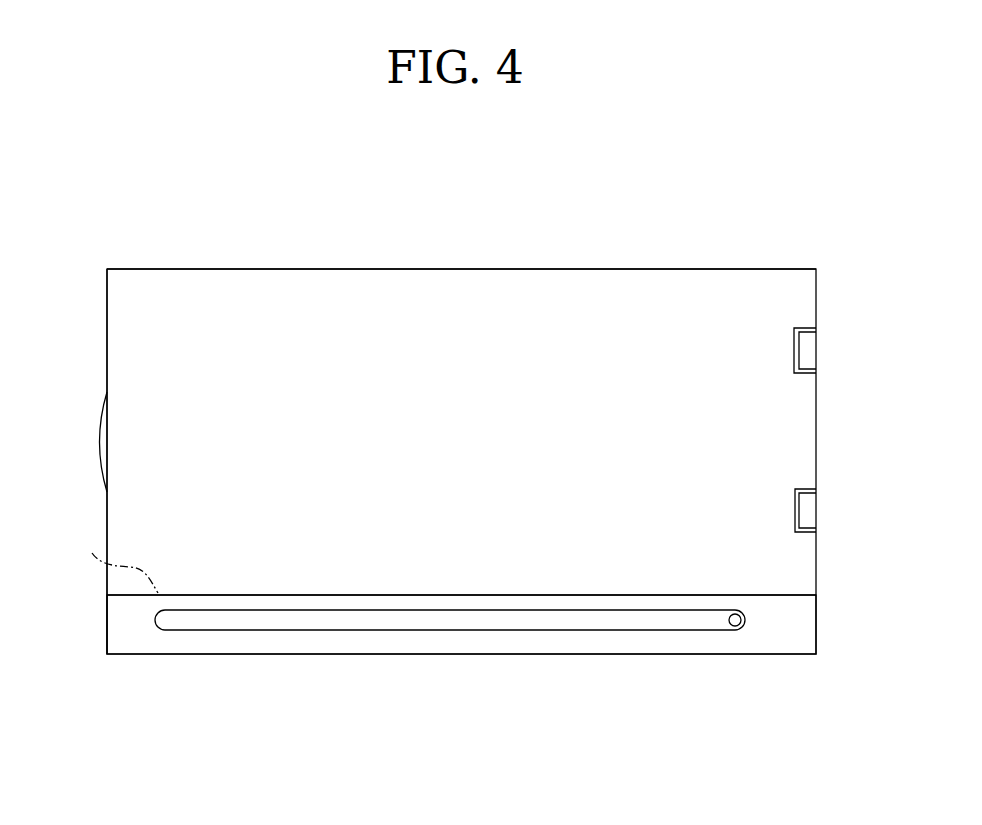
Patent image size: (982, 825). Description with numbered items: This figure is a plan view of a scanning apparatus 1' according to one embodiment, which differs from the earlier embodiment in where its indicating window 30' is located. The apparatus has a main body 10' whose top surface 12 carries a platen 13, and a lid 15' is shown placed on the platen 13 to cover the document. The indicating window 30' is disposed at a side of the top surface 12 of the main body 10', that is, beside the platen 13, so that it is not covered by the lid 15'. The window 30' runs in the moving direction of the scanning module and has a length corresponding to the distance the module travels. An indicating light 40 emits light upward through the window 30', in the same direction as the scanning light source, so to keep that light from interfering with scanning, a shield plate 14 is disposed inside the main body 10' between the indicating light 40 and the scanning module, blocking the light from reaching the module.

The scanning apparatus 1' is at (461, 413).
The main body 10' is at (430, 582).
The top surface 12 is at (132, 640).
The platen 13 is at (128, 359).
The shield plate 14 is at (114, 562).
The lid 15' is at (461, 238).
The indicating window 30' is at (450, 665).
The indicating light 40 is at (735, 630).